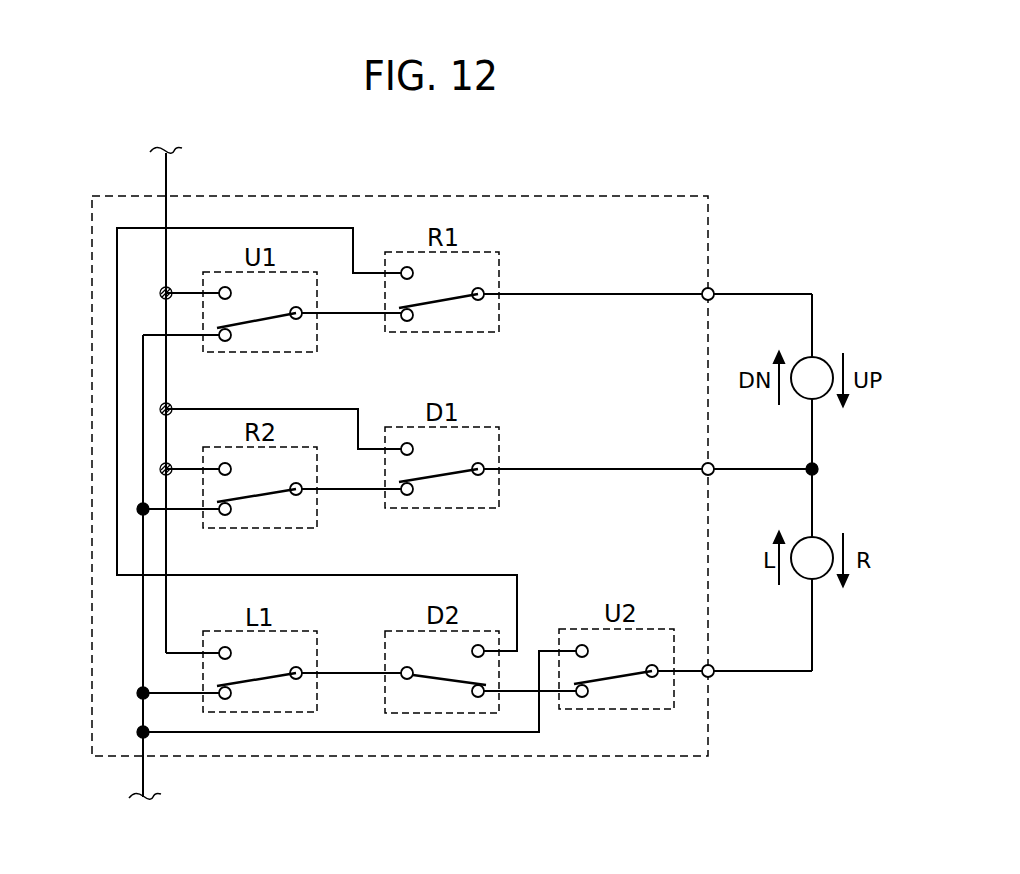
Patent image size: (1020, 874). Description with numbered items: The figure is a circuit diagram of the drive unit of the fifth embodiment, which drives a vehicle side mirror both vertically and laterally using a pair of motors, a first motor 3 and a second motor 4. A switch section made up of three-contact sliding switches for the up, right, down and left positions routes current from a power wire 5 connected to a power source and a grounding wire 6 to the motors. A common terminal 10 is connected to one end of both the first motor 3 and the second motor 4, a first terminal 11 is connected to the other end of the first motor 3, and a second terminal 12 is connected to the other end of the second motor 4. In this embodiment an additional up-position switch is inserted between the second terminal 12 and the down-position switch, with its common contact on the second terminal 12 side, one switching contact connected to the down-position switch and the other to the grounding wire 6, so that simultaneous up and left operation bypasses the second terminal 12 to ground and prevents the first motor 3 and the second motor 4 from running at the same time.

The first motor 3 is at (820, 362).
The second motor 4 is at (820, 542).
The power wire 5 is at (166, 170).
The grounding wire 6 is at (143, 777).
The common terminal 10 is at (702, 463).
The first terminal 11 is at (714, 289).
The second terminal 12 is at (714, 677).